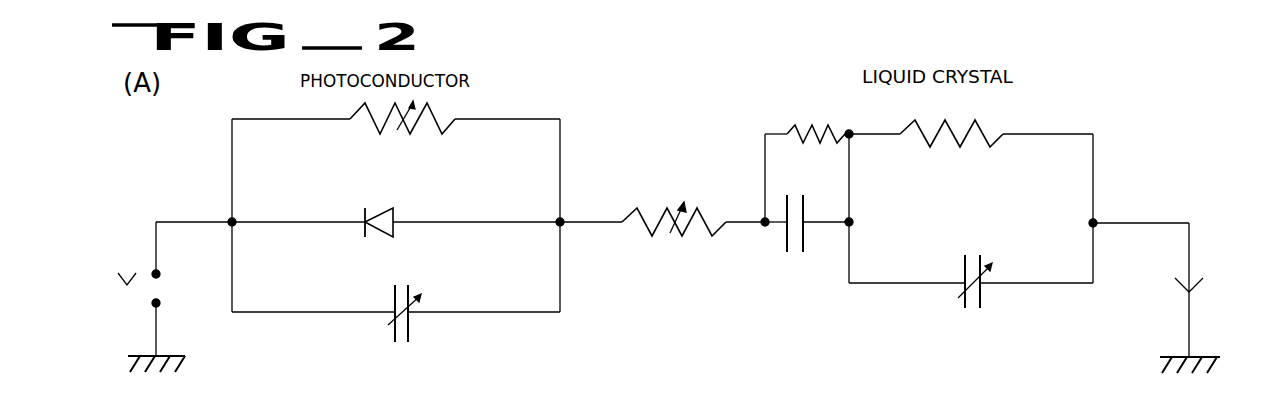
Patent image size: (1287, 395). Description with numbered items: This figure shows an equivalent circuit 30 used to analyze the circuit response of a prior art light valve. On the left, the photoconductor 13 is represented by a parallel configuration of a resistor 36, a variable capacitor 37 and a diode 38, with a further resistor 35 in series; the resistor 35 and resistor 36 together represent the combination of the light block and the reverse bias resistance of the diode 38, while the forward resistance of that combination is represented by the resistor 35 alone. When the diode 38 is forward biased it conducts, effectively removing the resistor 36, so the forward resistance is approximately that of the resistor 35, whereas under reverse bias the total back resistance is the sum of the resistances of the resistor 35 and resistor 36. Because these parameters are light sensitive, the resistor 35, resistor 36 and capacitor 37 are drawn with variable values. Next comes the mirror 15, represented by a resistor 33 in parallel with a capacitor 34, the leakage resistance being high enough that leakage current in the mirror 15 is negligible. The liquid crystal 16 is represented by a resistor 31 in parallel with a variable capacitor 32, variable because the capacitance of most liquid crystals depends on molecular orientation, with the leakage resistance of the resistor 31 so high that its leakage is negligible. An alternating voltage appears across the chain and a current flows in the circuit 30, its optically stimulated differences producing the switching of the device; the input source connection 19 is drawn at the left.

The photoconductor layer 13 is at (462, 103).
The mirror layer 15 is at (775, 116).
The liquid crystal modulator 16 is at (1004, 116).
The input voltage source 19 is at (138, 297).
The equivalent circuit 30 is at (566, 71).
The resistor 31 is at (990, 151).
The capacitor 32 is at (989, 258).
The resistor 33 is at (838, 127).
The capacitor 34 is at (783, 248).
The resistor 35 is at (712, 240).
The resistor 36 is at (441, 135).
The capacitor 37 is at (421, 285).
The diode 38 is at (399, 212).